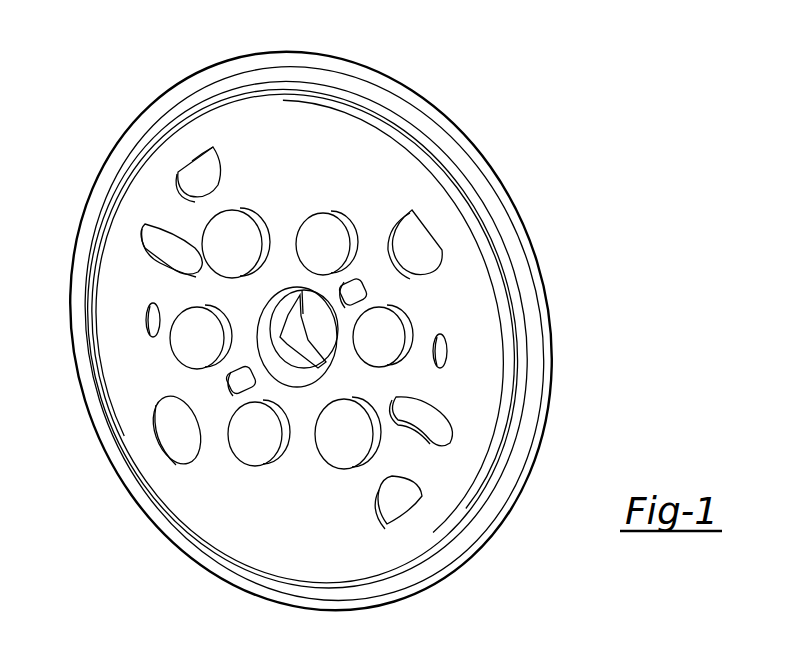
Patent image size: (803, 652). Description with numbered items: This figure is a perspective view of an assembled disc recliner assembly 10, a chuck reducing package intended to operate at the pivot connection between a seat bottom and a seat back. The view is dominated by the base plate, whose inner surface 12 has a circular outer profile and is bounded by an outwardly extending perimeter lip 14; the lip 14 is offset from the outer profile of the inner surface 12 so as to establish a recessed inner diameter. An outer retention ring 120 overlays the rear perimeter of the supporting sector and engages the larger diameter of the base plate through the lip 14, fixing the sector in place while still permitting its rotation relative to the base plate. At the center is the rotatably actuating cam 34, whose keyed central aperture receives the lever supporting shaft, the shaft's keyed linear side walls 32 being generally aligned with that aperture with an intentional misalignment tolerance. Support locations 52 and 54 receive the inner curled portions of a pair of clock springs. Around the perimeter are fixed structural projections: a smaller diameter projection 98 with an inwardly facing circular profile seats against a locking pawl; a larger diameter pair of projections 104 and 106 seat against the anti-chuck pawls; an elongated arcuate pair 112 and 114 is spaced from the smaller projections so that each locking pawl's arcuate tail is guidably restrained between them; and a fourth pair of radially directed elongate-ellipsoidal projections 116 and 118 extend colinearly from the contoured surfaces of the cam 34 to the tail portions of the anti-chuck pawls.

The disc recliner assembly 10 is at (311, 326).
The base plate inner surface 12 is at (311, 326).
The lip 14 is at (293, 592).
The linear side walls 32 is at (322, 363).
The cam 34 is at (304, 290).
The support location 52 is at (442, 352).
The support location 54 is at (150, 322).
The outer perimeter located projection 98 is at (200, 163).
The larger diameter projection 104 is at (421, 250).
The larger diameter projection 106 is at (160, 418).
The elongated arcuate projection 112 is at (157, 237).
The elongated arcuate projection 114 is at (433, 425).
The radially directed elongate-ellipsoidal projection 116 is at (357, 280).
The radially directed elongate-ellipsoidal projection 118 is at (240, 382).
The outer retention ring 120 is at (268, 57).